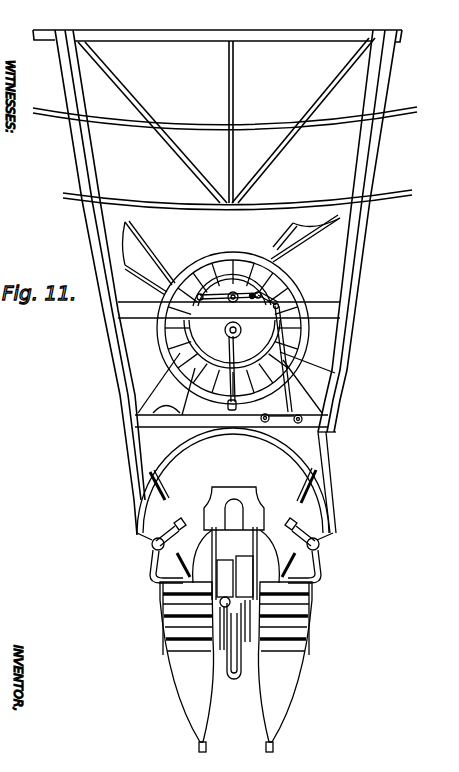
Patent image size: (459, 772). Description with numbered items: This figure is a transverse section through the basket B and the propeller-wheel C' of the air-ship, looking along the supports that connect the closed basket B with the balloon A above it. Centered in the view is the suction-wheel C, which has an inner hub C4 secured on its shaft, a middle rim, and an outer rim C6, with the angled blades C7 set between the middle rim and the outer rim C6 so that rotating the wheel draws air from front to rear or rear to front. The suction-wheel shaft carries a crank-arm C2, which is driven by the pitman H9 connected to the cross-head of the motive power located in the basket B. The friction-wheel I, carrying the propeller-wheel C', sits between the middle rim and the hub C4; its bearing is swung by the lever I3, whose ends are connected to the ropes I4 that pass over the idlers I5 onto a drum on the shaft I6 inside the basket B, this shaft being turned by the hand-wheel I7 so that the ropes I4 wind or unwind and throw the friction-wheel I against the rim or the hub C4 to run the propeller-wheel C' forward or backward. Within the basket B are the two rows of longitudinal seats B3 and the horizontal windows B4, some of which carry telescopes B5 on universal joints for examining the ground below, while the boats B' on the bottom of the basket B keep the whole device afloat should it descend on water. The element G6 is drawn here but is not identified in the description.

The balloon A is at (225, 282).
The suction-wheel C is at (233, 317).
The propeller-wheel C' is at (232, 255).
The friction-wheel I is at (229, 284).
The outer rim C6 is at (158, 342).
The crank-arm C2 is at (243, 332).
The blades C7 is at (165, 391).
The inner hub C4 is at (205, 366).
The pitman H9 is at (227, 409).
The lever I3 is at (306, 361).
The idlers I5 is at (277, 412).
The shaft I6 is at (305, 408).
The basket B is at (220, 486).
The ropes I4 is at (300, 441).
The hand-wheel I7 is at (292, 470).
The horizontal windows B4 is at (150, 543).
The telescopes B5 is at (148, 558).
The longitudinal seats B3 is at (193, 552).
The seat G6 is at (215, 516).
The boats B' is at (236, 667).